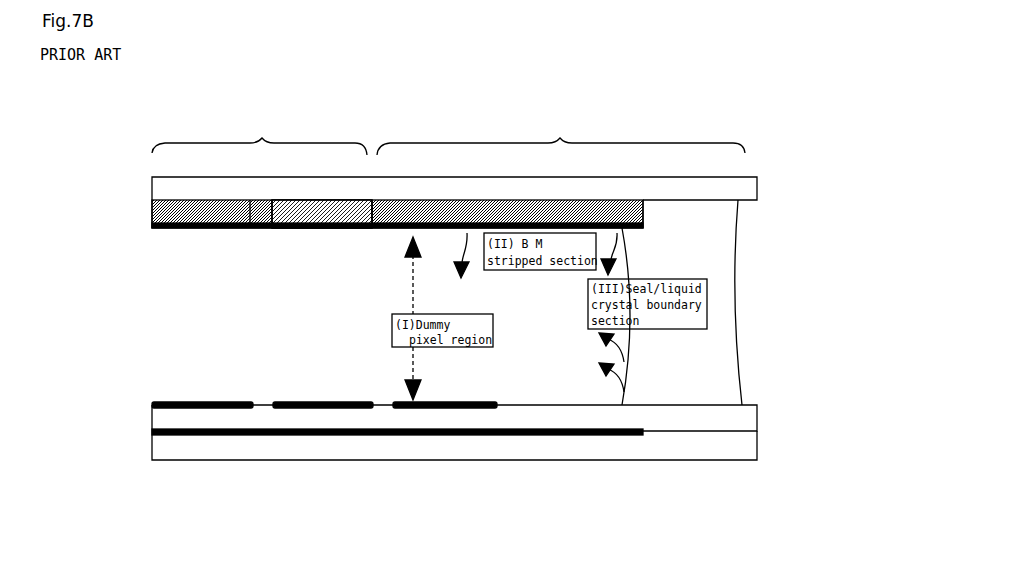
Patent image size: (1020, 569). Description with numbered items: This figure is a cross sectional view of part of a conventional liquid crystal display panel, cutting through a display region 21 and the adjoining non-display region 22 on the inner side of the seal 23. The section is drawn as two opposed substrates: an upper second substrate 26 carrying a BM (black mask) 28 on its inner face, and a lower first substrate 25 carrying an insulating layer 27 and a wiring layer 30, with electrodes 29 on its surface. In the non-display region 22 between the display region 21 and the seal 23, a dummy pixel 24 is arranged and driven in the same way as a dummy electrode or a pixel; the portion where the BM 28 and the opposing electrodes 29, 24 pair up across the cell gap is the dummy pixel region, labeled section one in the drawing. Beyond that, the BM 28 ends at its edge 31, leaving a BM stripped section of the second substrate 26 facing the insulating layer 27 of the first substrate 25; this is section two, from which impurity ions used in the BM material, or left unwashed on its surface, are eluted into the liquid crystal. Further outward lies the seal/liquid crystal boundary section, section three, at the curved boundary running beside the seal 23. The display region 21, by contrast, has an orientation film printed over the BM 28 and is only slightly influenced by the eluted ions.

The display region 21 is at (262, 138).
The non-display region 22 is at (560, 138).
The seal 23 is at (713, 290).
The dummy pixel 24 is at (437, 407).
The TFT substrate 25 is at (742, 451).
The counter substrate 26 is at (742, 192).
The insulating layer 27 is at (737, 415).
The black matrix 28 is at (152, 229).
The pixel electrodes 29 is at (297, 407).
The wiring layer 30 is at (570, 435).
The black matrix end 31 is at (643, 221).